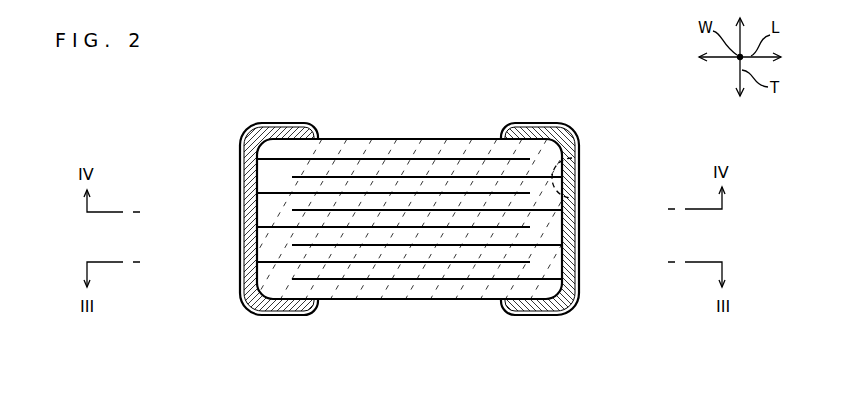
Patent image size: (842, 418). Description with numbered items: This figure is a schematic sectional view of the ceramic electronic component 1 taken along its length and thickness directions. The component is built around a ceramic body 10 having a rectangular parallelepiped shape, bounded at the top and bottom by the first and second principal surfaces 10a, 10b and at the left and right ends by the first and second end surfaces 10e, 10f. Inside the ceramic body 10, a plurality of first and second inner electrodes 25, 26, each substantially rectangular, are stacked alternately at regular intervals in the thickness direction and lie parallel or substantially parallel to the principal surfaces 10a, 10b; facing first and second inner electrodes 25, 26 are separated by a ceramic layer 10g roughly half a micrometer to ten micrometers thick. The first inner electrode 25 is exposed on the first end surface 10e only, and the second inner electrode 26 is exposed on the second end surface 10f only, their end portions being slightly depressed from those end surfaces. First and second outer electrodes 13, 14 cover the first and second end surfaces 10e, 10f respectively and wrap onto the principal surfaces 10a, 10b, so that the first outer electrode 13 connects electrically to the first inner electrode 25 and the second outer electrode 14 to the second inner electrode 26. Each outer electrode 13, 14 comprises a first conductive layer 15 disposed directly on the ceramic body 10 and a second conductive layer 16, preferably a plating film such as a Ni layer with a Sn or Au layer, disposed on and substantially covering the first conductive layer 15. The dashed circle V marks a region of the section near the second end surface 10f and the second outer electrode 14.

The ceramic electronic component 1 is at (572, 75).
The ceramic body 10 is at (484, 128).
The first principal surface 10a is at (398, 129).
The second principal surface 10b is at (411, 300).
The first end surface 10e is at (257, 221).
The second end surface 10f is at (563, 224).
The ceramic layer 10g is at (477, 268).
The first outer electrode 13 is at (237, 197).
The second outer electrode 14 is at (582, 261).
The first conductive layer 15 is at (248, 250).
The second conductive layer 16 is at (243, 280).
The first inner electrode 25 is at (337, 263).
The second inner electrode 26 is at (362, 280).
The enlarged detail region V is at (584, 180).